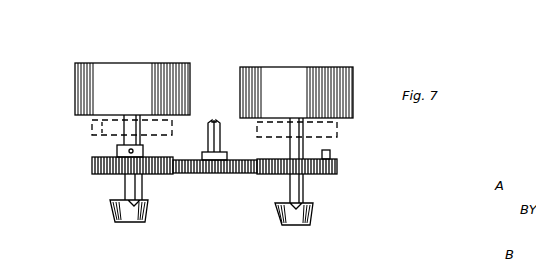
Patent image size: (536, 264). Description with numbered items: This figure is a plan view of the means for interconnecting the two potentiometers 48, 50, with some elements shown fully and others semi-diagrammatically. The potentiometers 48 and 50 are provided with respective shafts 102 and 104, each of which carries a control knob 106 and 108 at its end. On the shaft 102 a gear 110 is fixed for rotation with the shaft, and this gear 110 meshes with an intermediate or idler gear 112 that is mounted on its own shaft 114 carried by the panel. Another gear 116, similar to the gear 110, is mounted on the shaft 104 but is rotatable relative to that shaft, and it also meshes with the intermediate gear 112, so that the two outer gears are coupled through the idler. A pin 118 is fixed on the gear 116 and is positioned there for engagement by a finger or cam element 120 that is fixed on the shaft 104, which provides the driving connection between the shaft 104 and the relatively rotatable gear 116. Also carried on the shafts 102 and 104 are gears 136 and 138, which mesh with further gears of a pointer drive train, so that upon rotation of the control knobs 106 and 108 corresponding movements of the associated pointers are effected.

The potentiometer 48 is at (122, 66).
The potentiometer 50 is at (319, 73).
The shaft 102 is at (125, 190).
The shaft 104 is at (304, 188).
The control knob 106 is at (115, 216).
The control knob 108 is at (307, 226).
The gear 110 is at (92, 163).
The intermediate or idler gear 112 is at (204, 175).
The shaft 114 is at (218, 120).
The gear 116 is at (335, 175).
The pin 118 is at (322, 150).
The finger or cam element 120 is at (330, 156).
The gear 136 is at (90, 124).
The gear 138 is at (337, 128).